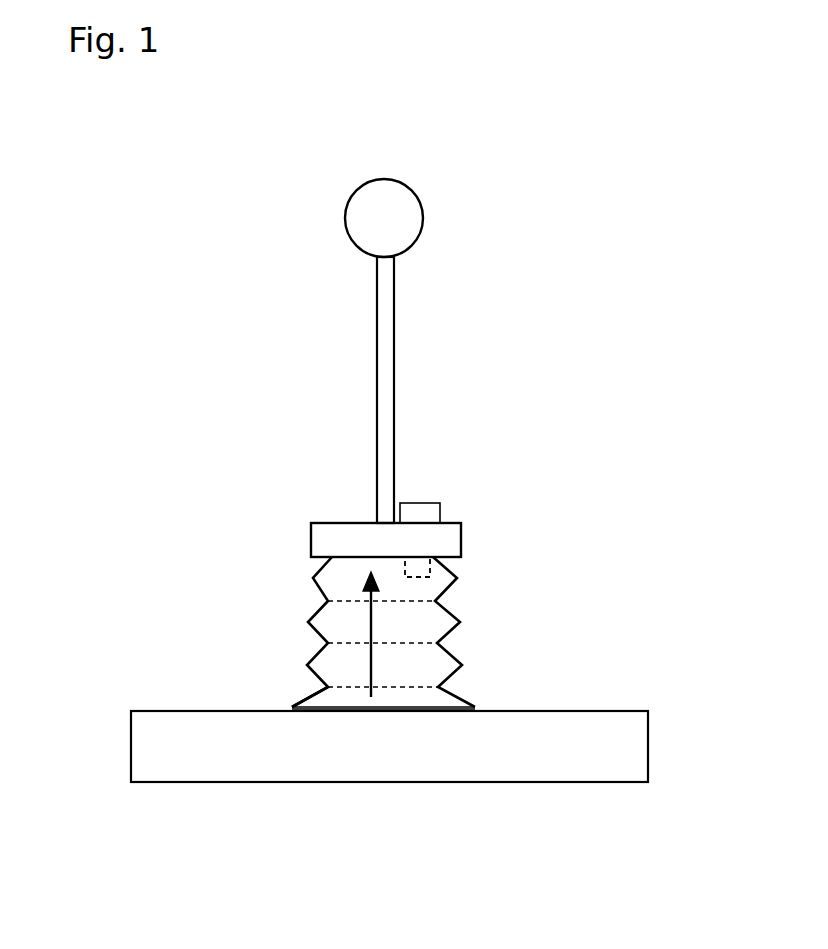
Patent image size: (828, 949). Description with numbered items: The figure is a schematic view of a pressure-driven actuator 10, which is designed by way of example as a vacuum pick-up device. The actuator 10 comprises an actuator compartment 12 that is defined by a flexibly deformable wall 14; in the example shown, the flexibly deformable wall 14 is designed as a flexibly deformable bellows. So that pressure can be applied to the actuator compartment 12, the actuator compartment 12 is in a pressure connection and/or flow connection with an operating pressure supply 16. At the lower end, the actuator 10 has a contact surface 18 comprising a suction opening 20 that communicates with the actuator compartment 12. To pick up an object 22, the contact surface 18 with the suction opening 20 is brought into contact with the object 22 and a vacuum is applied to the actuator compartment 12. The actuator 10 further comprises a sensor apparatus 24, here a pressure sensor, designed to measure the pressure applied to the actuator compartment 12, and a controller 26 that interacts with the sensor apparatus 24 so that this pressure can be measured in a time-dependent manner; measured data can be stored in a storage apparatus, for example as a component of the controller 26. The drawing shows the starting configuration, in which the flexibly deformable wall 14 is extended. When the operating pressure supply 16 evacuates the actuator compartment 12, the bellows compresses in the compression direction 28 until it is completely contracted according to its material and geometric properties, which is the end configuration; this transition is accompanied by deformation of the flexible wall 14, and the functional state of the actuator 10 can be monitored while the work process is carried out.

The actuator 10 is at (552, 275).
The actuator compartment 12 is at (375, 632).
The flexibly deformable wall 14 is at (318, 608).
The operating pressure supply 16 is at (393, 207).
The contact surface 18 is at (395, 713).
The suction opening 20 is at (295, 705).
The object 22 is at (587, 752).
The sensor apparatus 24 is at (418, 567).
The controller 26 is at (418, 515).
The compression direction 28 is at (368, 615).